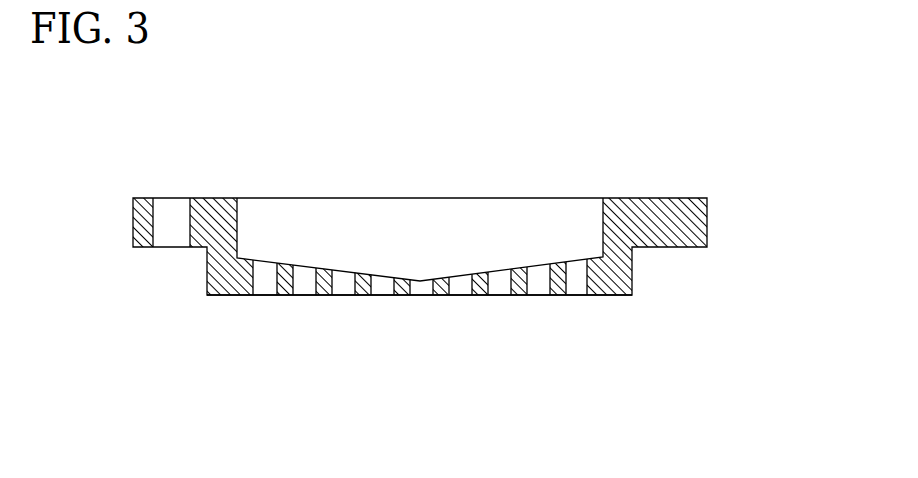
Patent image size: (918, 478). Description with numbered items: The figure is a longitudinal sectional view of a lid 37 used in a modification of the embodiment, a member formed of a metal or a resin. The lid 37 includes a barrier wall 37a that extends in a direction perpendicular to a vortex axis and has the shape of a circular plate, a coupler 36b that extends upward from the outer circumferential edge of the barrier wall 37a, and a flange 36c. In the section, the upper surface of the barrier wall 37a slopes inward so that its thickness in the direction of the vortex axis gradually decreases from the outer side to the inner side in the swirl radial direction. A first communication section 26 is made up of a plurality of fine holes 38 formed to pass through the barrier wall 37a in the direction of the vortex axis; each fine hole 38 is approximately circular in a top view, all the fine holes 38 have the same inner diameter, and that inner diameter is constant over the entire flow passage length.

The lid 37 is at (621, 146).
The coupler 36b is at (622, 252).
The flange 36c is at (697, 223).
The first communication section 26 is at (421, 189).
The fine hole 38 is at (388, 285).
The barrier wall 37a is at (477, 288).